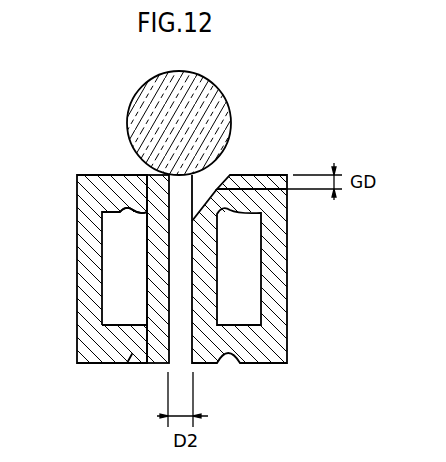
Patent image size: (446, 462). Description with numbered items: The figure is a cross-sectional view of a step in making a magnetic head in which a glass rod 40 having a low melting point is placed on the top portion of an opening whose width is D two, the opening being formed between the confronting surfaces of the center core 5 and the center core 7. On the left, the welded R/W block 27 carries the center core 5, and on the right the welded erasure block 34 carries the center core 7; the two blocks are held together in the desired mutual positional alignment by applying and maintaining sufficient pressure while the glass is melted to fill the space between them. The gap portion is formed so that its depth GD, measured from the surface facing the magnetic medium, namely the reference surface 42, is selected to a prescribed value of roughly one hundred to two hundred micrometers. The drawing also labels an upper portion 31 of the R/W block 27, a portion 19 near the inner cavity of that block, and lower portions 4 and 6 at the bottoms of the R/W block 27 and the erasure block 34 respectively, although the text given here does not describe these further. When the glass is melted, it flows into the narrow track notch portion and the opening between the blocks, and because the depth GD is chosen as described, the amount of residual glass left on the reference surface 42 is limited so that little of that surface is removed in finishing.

The glass rod 40 is at (140, 125).
The upper surface of left die member 31 is at (128, 174).
The reference surface 42 is at (263, 173).
The groove 19 is at (140, 211).
The R/W block 27 is at (83, 273).
The erasure block 34 is at (273, 303).
The left base block 4 is at (93, 366).
The center core 5 is at (155, 366).
The center core 7 is at (208, 367).
The right base block 6 is at (273, 358).